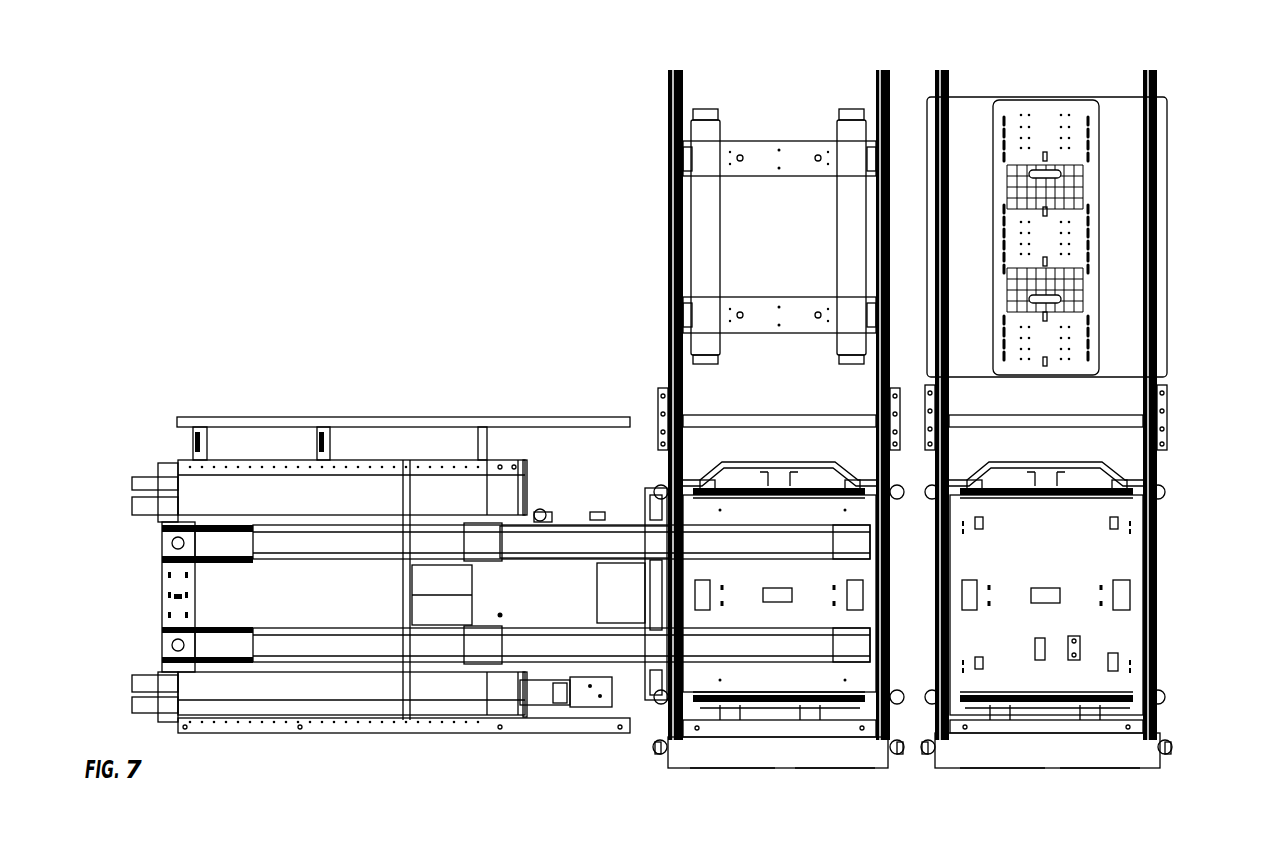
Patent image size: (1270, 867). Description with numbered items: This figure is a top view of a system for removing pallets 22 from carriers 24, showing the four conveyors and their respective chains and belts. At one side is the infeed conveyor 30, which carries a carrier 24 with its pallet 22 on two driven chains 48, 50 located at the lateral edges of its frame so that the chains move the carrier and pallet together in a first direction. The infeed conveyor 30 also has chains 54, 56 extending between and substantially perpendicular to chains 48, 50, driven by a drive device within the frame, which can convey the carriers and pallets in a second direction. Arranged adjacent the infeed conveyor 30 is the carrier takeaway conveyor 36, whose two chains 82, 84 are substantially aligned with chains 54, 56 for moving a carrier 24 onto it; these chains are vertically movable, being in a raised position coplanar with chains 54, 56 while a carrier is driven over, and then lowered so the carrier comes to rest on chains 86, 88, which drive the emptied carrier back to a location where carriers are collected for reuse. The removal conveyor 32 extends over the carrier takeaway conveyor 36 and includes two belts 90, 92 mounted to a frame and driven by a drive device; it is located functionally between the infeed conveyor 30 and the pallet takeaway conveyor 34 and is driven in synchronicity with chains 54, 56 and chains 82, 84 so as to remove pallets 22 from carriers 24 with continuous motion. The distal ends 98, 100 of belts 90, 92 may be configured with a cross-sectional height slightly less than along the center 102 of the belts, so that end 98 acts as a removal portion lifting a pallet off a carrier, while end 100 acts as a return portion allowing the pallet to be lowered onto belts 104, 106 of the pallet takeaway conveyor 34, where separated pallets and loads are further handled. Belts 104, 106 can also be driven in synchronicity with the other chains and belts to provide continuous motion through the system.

The pallet 22 is at (1046, 112).
The carrier 24 is at (1150, 172).
The infeed conveyor 30 is at (1183, 540).
The removal conveyor 32 is at (573, 486).
The pallet takeaway conveyor 34 is at (422, 410).
The carrier takeaway conveyor 36 is at (612, 233).
The driven chain 48 is at (1157, 86).
The driven chain 50 is at (950, 87).
The chain 54 is at (1000, 498).
The chain 56 is at (1006, 692).
The chain 82 is at (763, 498).
The chain 84 is at (748, 692).
The chain 86 is at (876, 376).
The chain 88 is at (683, 376).
The belt 90 is at (614, 540).
The belt 92 is at (617, 655).
The distal end 98 is at (858, 540).
The distal end 100 is at (500, 528).
The center 102 is at (733, 540).
The belt 104 is at (247, 492).
The belt 106 is at (227, 700).